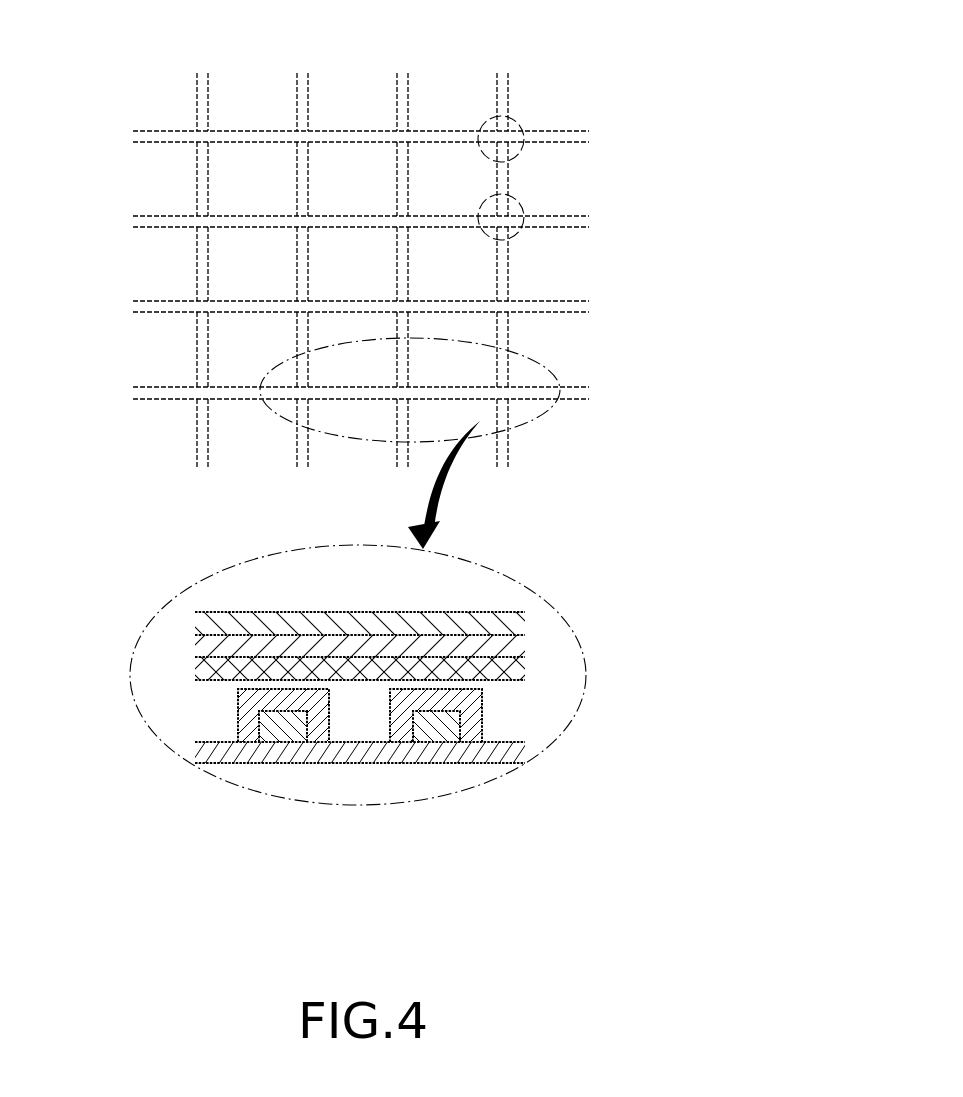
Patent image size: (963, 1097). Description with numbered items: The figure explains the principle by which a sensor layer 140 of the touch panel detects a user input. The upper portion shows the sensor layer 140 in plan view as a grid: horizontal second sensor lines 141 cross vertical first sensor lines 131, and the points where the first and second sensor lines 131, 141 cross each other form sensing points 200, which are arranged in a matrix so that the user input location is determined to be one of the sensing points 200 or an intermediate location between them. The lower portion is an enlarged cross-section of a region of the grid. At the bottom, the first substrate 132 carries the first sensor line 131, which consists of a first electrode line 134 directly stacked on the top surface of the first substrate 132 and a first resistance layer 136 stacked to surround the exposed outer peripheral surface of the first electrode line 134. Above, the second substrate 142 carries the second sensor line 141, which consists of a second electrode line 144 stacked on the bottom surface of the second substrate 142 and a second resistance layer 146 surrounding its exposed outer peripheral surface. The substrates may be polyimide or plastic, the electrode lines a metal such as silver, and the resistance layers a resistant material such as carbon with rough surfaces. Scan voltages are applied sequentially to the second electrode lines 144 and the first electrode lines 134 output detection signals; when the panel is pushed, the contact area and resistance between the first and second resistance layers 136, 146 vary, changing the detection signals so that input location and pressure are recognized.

The sensor layer 140 is at (566, 82).
The second sensor line 141 is at (570, 302).
The first sensor line 131 is at (508, 447).
The sensing point 200 is at (522, 148).
The second substrate 142 is at (500, 625).
The second electrode line 144 is at (508, 647).
The second resistance layer 146 is at (200, 670).
The first resistance layer 136 is at (390, 723).
The first electrode line 134 is at (428, 734).
The first substrate 132 is at (483, 762).